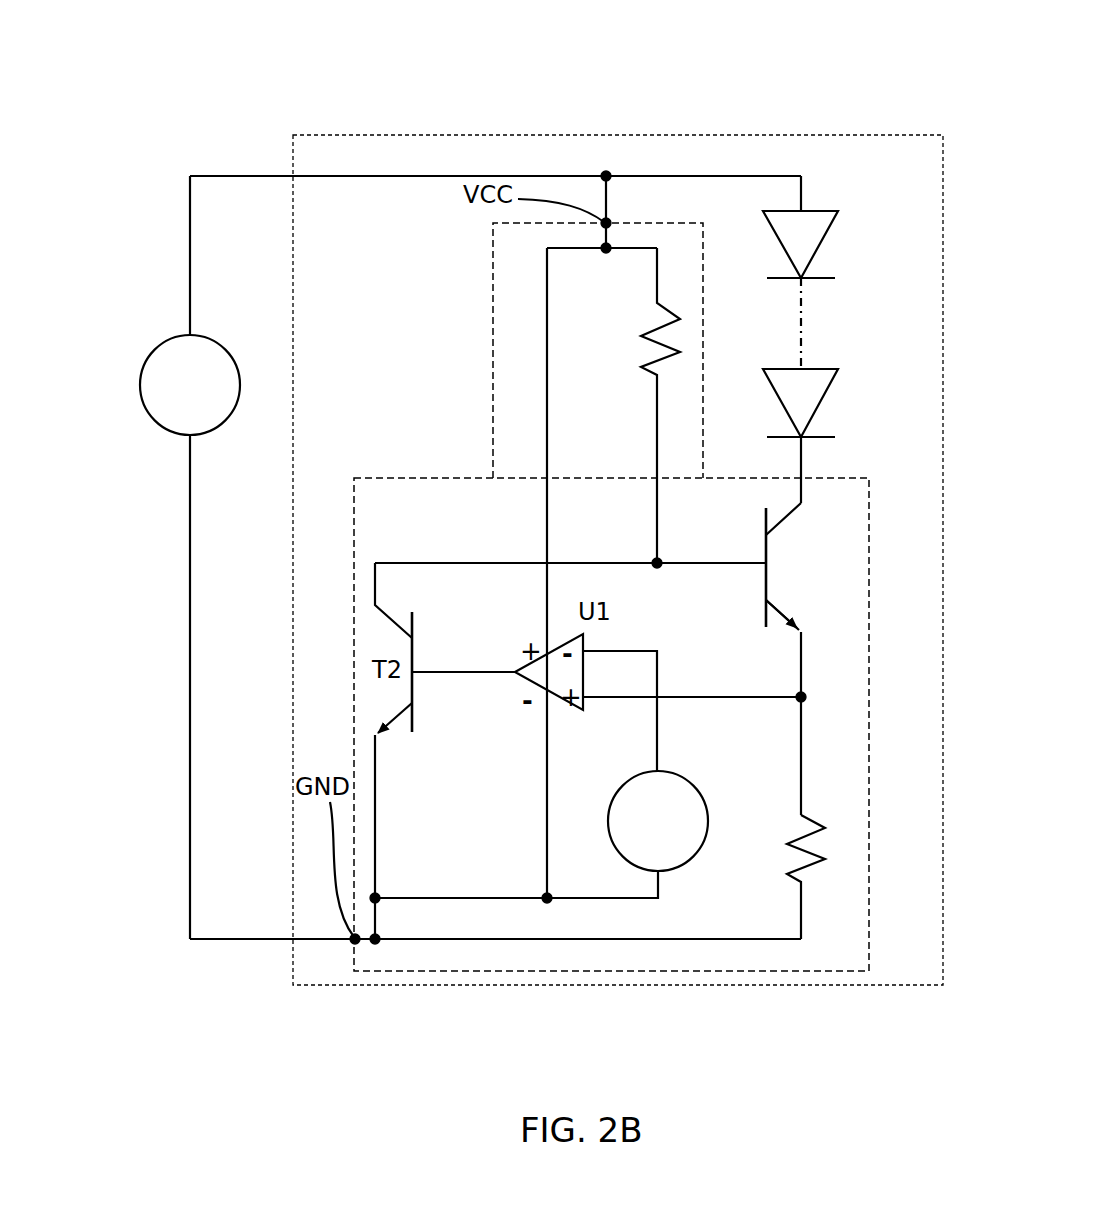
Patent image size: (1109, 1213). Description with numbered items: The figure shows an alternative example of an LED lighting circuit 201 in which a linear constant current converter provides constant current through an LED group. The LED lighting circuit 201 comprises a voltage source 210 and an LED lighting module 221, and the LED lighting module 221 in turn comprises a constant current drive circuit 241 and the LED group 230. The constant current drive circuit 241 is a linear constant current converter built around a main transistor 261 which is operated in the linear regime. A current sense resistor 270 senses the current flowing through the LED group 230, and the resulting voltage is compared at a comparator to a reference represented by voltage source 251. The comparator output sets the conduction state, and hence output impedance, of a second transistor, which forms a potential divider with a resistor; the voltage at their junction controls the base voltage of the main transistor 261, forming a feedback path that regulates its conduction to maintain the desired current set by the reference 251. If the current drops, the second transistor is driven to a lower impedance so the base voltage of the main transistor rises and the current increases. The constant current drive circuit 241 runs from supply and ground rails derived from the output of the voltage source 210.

The LED lighting circuit 201 is at (734, 96).
The voltage source 210 is at (162, 432).
The LED lighting module 221 is at (551, 987).
The LED group 230 is at (758, 312).
The constant current drive circuit 241 is at (461, 461).
The voltage source 251 is at (600, 785).
The main transistor 261 is at (807, 580).
The current sense resistor 270 is at (823, 862).